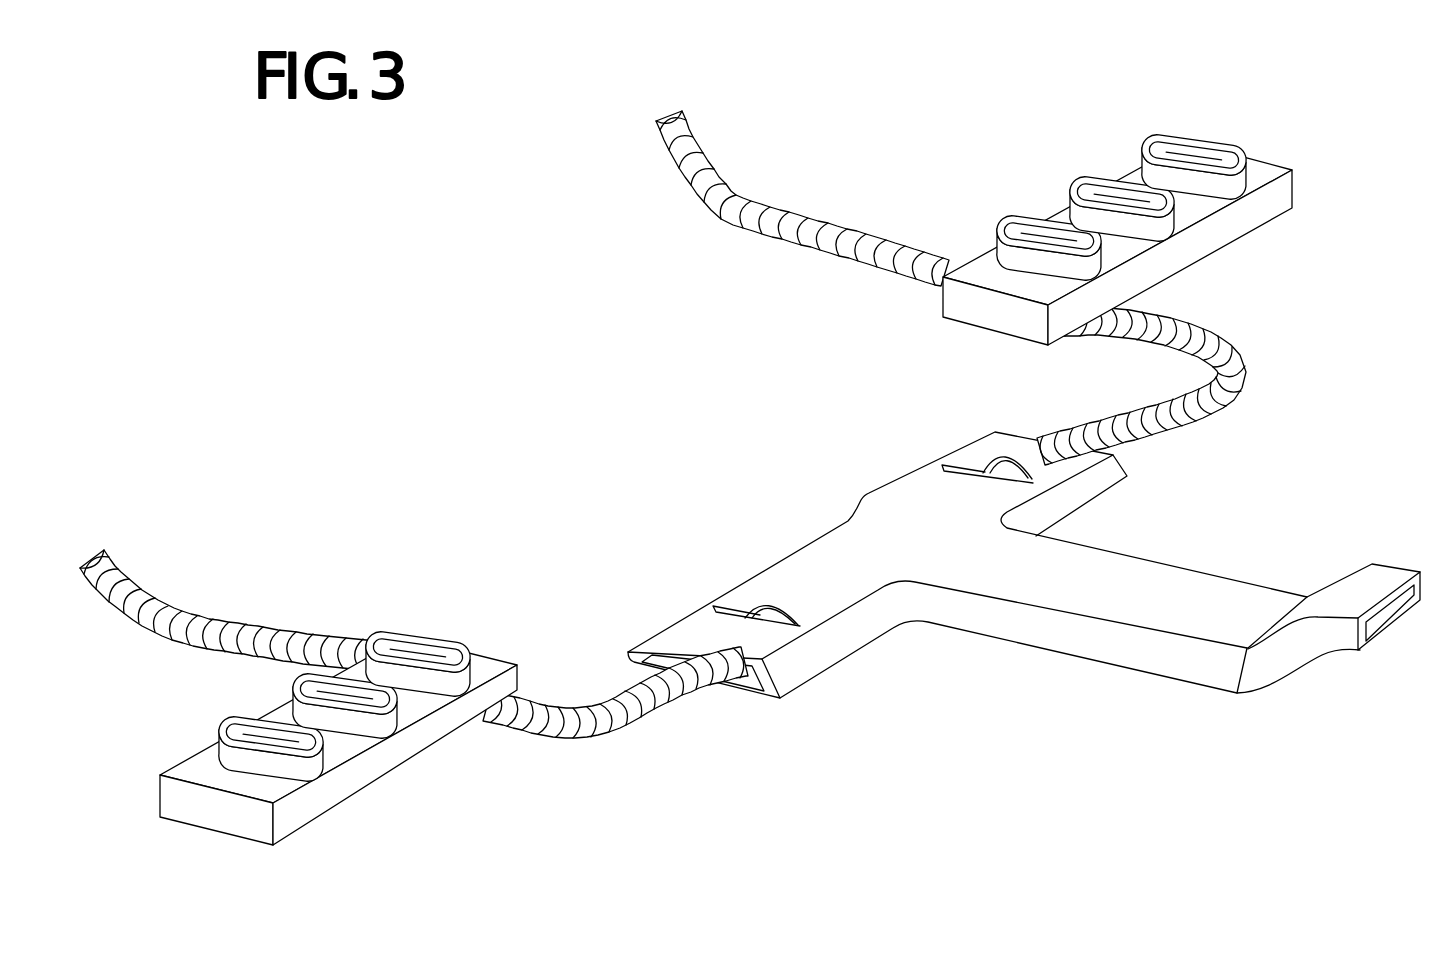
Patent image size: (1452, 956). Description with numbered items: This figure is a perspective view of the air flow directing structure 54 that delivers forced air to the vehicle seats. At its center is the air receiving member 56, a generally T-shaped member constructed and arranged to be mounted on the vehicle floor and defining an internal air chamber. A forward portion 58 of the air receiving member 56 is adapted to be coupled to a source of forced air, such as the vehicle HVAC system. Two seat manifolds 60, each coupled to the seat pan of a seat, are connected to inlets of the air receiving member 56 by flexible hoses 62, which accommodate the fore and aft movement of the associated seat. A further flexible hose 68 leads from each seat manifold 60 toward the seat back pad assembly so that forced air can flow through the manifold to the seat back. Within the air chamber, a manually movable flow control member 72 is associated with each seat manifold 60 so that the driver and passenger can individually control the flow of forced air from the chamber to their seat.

The air flow directing structure 54 is at (1025, 557).
The air receiving member 56 is at (1097, 650).
The forward portion 58 is at (1365, 652).
The seat manifold 60 is at (1243, 223).
The flexible hose 62 is at (1247, 348).
The flexible hose 68 is at (818, 223).
The flow control member 72 is at (1026, 447).